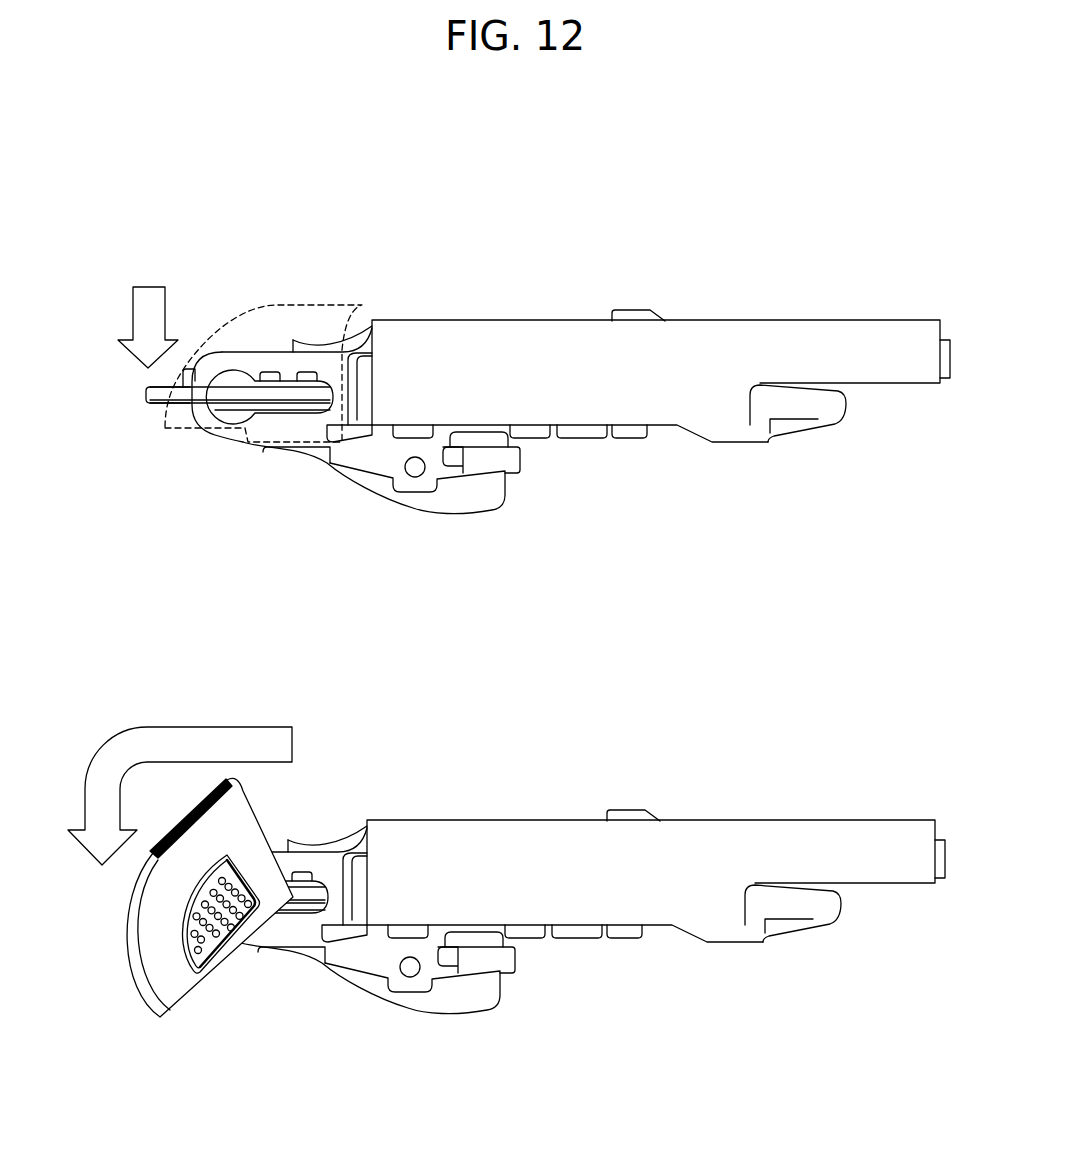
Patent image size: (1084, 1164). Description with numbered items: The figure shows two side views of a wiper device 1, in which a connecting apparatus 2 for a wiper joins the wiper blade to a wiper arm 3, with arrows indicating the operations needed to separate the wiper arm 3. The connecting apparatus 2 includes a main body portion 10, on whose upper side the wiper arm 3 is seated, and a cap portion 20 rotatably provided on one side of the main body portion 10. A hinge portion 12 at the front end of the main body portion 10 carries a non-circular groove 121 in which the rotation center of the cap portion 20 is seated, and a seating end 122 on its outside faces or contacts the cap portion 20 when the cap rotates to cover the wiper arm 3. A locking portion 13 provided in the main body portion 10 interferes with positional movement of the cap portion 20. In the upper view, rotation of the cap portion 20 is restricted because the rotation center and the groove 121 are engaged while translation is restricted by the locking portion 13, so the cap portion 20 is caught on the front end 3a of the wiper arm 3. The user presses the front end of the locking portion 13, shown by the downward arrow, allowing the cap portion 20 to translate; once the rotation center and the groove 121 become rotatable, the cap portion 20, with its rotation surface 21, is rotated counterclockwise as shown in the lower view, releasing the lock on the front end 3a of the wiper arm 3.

The wiper device 1 is at (915, 194).
The connecting apparatus 2 is at (521, 489).
The wiper arm 3 is at (786, 340).
The front end 3a is at (388, 330).
The main body portion 10 is at (584, 445).
The hinge portion 12 is at (213, 427).
The locking portion 13 is at (148, 398).
The cap portion 20 is at (284, 308).
The rotation surface 21 is at (207, 982).
The groove 121 is at (232, 418).
The seating end 122 is at (307, 452).